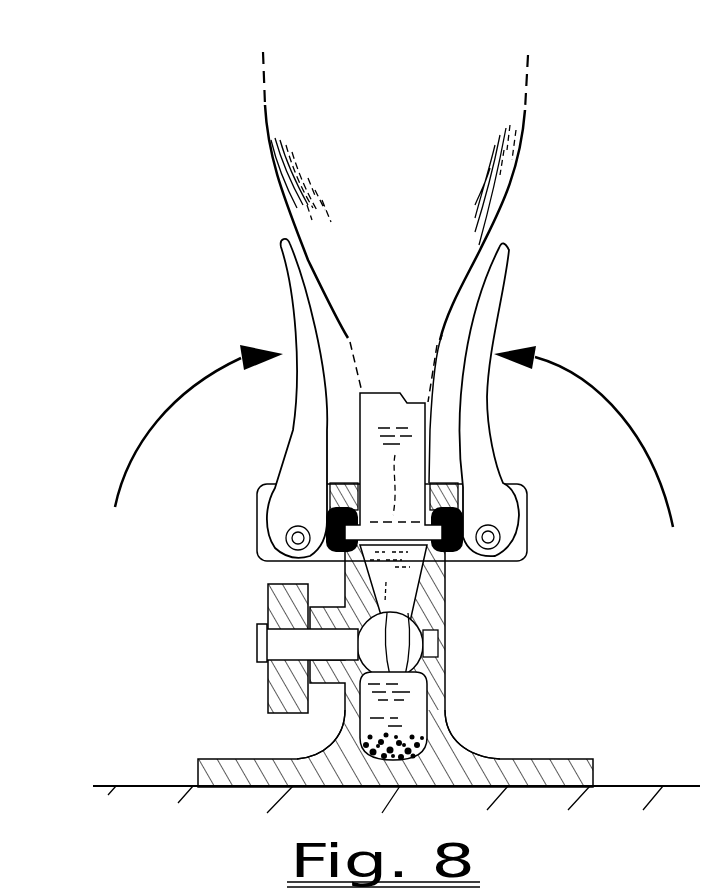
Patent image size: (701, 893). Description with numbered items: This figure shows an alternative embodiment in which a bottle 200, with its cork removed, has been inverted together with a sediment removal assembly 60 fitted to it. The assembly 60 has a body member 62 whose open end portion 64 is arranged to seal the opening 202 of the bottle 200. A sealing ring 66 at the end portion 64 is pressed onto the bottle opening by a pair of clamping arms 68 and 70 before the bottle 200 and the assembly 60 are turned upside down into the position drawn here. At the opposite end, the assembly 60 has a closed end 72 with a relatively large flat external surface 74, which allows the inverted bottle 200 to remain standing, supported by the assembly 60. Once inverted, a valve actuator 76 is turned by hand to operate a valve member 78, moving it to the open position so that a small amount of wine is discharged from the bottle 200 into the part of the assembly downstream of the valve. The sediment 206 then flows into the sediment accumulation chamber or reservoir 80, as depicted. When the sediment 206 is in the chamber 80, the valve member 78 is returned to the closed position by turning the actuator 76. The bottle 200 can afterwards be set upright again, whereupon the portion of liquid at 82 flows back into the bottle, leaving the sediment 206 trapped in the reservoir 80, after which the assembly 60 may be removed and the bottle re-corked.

The sediment removal assembly 60 is at (589, 575).
The body member 62 is at (445, 613).
The open end portion 64 is at (452, 458).
The sealing ring 66 is at (344, 560).
The clamping arm 68 is at (297, 402).
The clamping arm 70 is at (487, 410).
The closed end 72 is at (482, 737).
The flat external surface 74 is at (357, 788).
The valve actuator 76 is at (266, 681).
The valve member 78 is at (416, 646).
The sediment accumulation chamber 80 is at (412, 718).
The portion of liquid 82 is at (387, 593).
The bottle 200 is at (518, 166).
The opening 202 is at (465, 487).
The sediment 206 is at (341, 708).